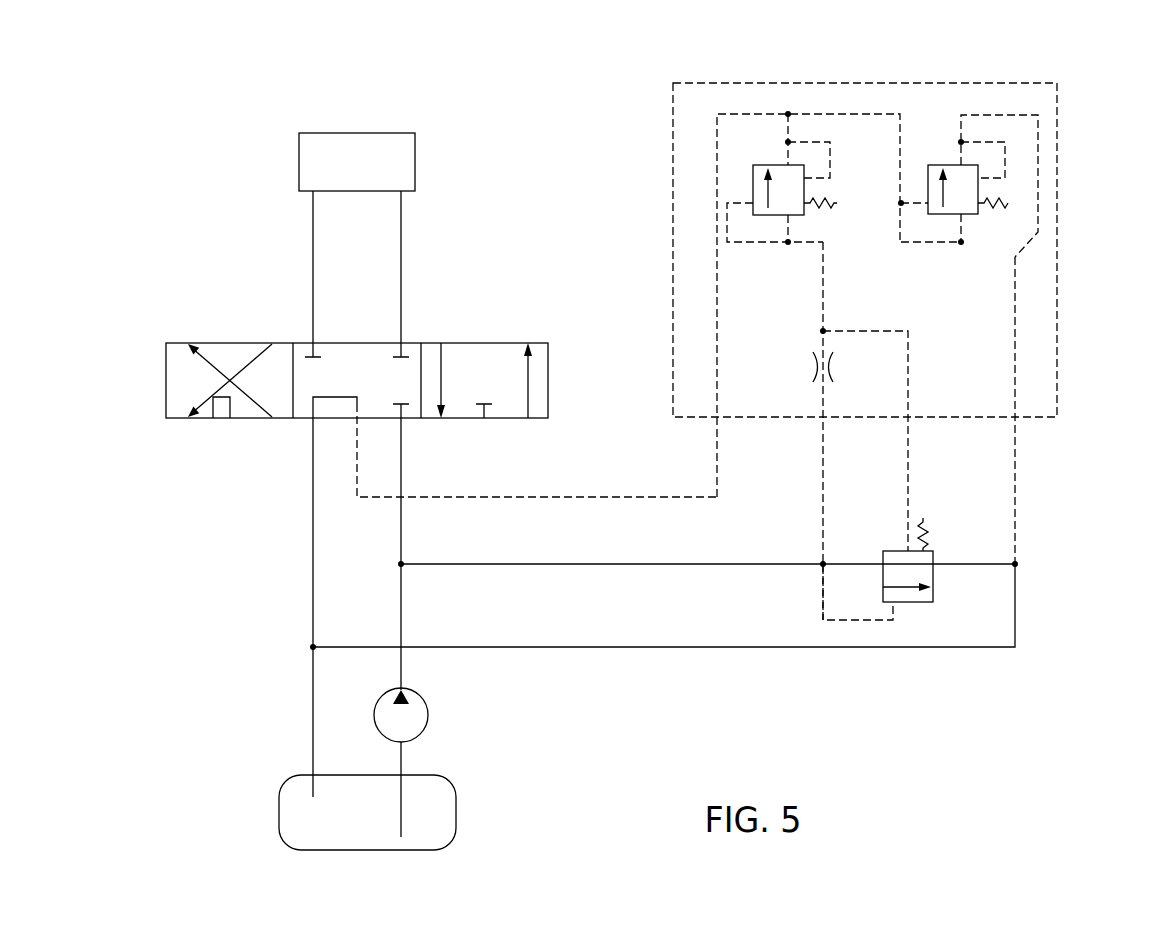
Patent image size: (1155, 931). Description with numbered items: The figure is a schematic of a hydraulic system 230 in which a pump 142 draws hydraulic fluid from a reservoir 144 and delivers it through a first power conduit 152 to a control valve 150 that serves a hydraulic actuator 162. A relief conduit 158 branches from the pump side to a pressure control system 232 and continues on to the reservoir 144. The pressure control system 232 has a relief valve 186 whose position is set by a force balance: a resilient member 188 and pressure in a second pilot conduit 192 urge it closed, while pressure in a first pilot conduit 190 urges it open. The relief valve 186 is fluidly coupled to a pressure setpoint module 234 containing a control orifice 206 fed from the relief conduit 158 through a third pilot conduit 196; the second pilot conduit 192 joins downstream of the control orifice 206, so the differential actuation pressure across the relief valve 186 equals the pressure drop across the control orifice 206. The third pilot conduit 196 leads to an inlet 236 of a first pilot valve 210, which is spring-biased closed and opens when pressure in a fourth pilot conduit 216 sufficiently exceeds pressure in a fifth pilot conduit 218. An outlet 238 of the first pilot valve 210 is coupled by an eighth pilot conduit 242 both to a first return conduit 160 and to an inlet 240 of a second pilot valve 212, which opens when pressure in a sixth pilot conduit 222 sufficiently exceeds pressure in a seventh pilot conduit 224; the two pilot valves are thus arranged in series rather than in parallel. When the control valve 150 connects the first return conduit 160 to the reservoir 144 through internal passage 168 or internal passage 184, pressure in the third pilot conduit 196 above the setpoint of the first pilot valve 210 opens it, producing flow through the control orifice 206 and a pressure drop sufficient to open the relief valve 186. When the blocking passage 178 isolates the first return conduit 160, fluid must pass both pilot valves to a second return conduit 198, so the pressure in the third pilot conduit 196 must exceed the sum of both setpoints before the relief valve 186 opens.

The pump 142 is at (439, 715).
The reservoir 144 is at (404, 796).
The control valve 150 is at (358, 352).
The first power conduit 152 is at (439, 554).
The relief conduit 158 is at (664, 607).
The first return conduit 160 is at (536, 479).
The hydraulic actuator 162 is at (357, 238).
The internal passage 168 is at (312, 443).
The blocking passage 178 is at (488, 437).
The internal passage 184 is at (235, 434).
The relief valve 186 is at (911, 623).
The resilient member 188 is at (958, 535).
The first pilot conduit 190 is at (858, 629).
The second pilot conduit 192 is at (904, 441).
The third pilot conduit 196 is at (825, 431).
The second return conduit 198 is at (1051, 410).
The control orifice 206 is at (790, 367).
The first pilot valve 210 is at (795, 127).
The second pilot valve 212 is at (968, 126).
The fourth pilot conduit 216 is at (767, 261).
The fifth pilot conduit 218 is at (836, 108).
The sixth pilot conduit 222 is at (931, 254).
The seventh pilot conduit 224 is at (1038, 156).
The hydraulic system 230 is at (126, 572).
The pressure control system 232 is at (711, 728).
The pressure setpoint module 234 is at (811, 250).
The inlet 236 is at (716, 222).
The outlet 238 is at (759, 102).
The inlet 240 is at (1039, 195).
The eighth pilot conduit 242 is at (829, 264).